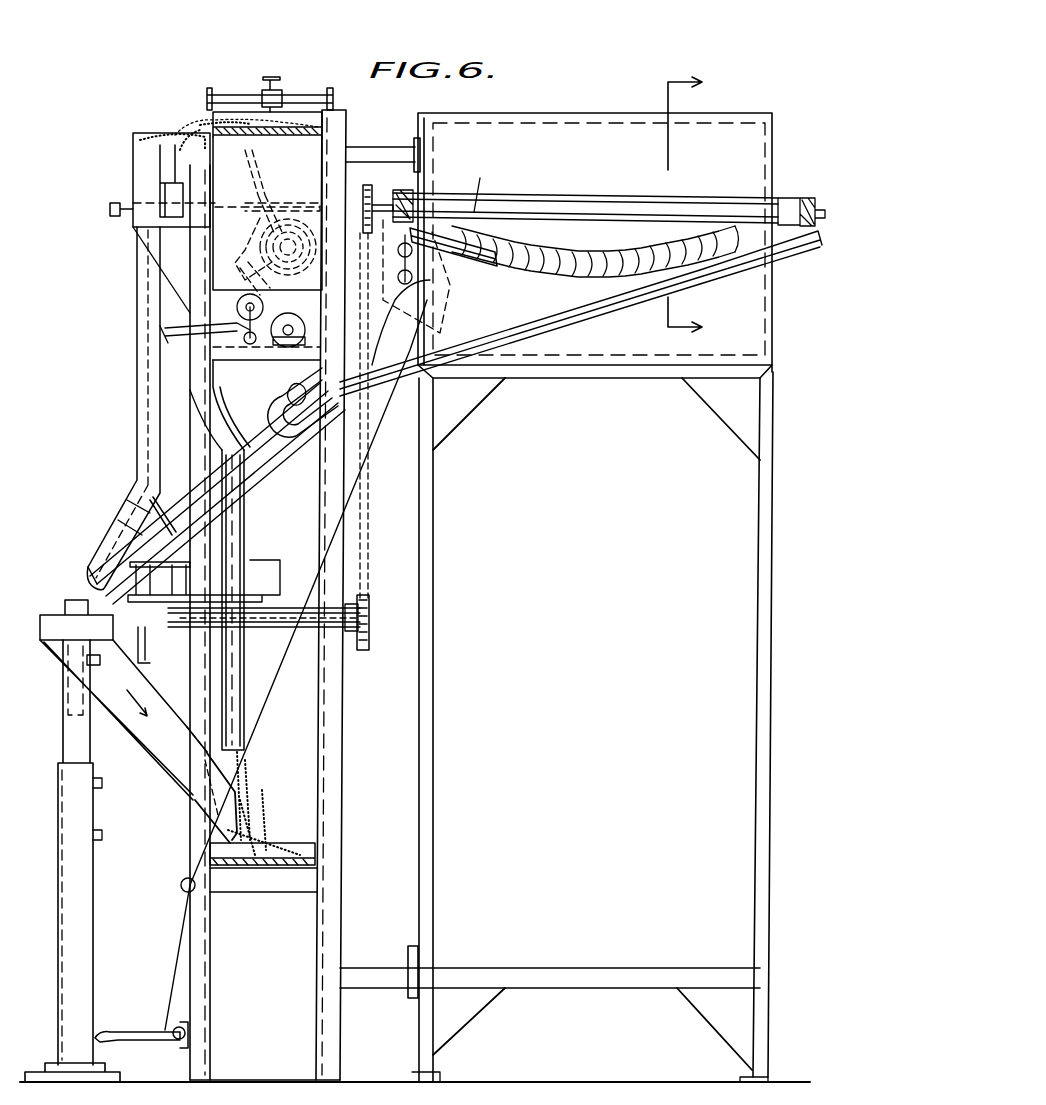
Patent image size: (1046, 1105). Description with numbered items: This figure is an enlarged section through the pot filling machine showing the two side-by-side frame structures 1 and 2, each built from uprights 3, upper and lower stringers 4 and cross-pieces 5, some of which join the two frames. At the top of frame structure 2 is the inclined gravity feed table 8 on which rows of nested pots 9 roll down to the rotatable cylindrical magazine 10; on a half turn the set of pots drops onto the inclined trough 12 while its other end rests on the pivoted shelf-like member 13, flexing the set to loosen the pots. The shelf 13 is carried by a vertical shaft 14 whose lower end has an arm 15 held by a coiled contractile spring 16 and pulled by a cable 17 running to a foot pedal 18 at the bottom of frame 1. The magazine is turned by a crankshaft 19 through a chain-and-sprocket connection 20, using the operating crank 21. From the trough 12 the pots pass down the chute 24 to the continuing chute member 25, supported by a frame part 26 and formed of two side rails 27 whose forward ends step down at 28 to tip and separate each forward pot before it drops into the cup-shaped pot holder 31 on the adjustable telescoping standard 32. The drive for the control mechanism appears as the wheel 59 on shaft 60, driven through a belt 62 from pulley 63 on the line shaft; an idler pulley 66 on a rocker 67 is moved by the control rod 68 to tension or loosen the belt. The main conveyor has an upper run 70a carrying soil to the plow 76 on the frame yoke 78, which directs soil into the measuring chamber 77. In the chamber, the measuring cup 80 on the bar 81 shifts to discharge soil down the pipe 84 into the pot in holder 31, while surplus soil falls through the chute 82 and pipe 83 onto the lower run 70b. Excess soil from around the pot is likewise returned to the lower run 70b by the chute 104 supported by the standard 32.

The frame structure 1 is at (354, 733).
The frame structure 2 is at (800, 440).
The uprights 3 is at (760, 598).
The stringers 4 is at (302, 132).
The cross-pieces 5 is at (618, 380).
The gravity feed table 8 is at (718, 198).
The nested pots 9 is at (585, 256).
The cylindrical magazine 10 is at (605, 205).
The trough 12 is at (552, 322).
The shelf-like member 13 is at (522, 248).
The shaft 14 is at (380, 190).
The arm 15 is at (446, 312).
The coiled contractile spring 16 is at (490, 185).
The cable 17 is at (270, 690).
The foot pedal 18 is at (140, 1030).
The crankshaft 19 is at (280, 630).
The chain-and-sprocket wheel connection 20 is at (372, 508).
The operating crank 21 is at (146, 650).
The chute 24 is at (292, 388).
The inclined chute member 25 is at (286, 468).
The frame part 26 is at (258, 496).
The side rails 27 is at (186, 500).
The steps 28 is at (132, 557).
The pot holder 31 is at (72, 600).
The standard 32 is at (62, 800).
The wheel 59 is at (312, 192).
The shaft 60 is at (300, 248).
The belt 62 is at (248, 240).
The pulley 63 is at (266, 326).
The idler pulley 66 is at (256, 290).
The rocker 67 is at (231, 405).
The control rod 68 is at (165, 334).
The upper horizontal run 70a is at (205, 118).
The lower horizontal run 70b is at (288, 855).
The plow 76 is at (270, 108).
The measuring chamber 77 is at (182, 132).
The frame yoke 78 is at (292, 97).
The measuring cup 80 is at (158, 195).
The bar 81 is at (117, 216).
The chute 82 is at (172, 285).
The pipe 83 is at (256, 535).
The pipe 84 is at (140, 403).
The chute 104 is at (175, 762).